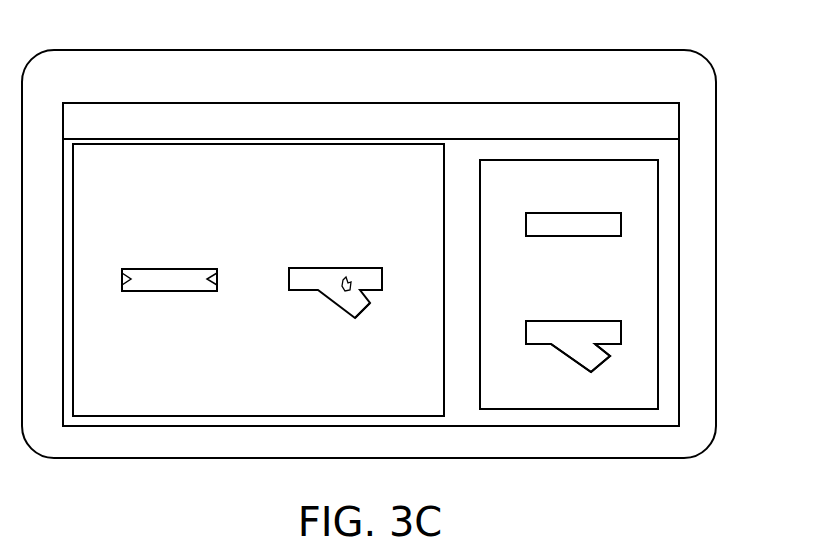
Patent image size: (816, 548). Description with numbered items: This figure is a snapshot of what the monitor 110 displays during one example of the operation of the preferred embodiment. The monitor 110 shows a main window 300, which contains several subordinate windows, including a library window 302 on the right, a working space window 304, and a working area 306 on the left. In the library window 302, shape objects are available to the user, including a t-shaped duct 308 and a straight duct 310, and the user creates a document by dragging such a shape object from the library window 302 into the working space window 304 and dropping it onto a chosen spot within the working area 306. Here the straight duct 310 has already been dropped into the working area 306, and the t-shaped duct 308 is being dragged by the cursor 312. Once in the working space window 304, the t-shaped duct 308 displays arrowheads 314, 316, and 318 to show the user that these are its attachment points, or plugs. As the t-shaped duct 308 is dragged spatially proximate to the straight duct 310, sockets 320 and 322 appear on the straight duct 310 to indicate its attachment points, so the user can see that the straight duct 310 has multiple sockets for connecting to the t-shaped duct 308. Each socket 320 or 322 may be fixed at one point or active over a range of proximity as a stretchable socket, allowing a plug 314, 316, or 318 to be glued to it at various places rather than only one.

The monitor 110 is at (611, 50).
The main window 300 is at (540, 102).
The library window 302 is at (625, 361).
The working space window 304 is at (460, 412).
The working area 306 is at (172, 409).
The t-shaped duct 308 is at (333, 305).
The straight duct 310 is at (152, 291).
The cursor 312 is at (353, 274).
The arrowhead 314 is at (362, 308).
The arrowhead 316 is at (382, 278).
The arrowhead 318 is at (290, 278).
The socket 320 is at (218, 280).
The socket 322 is at (124, 279).